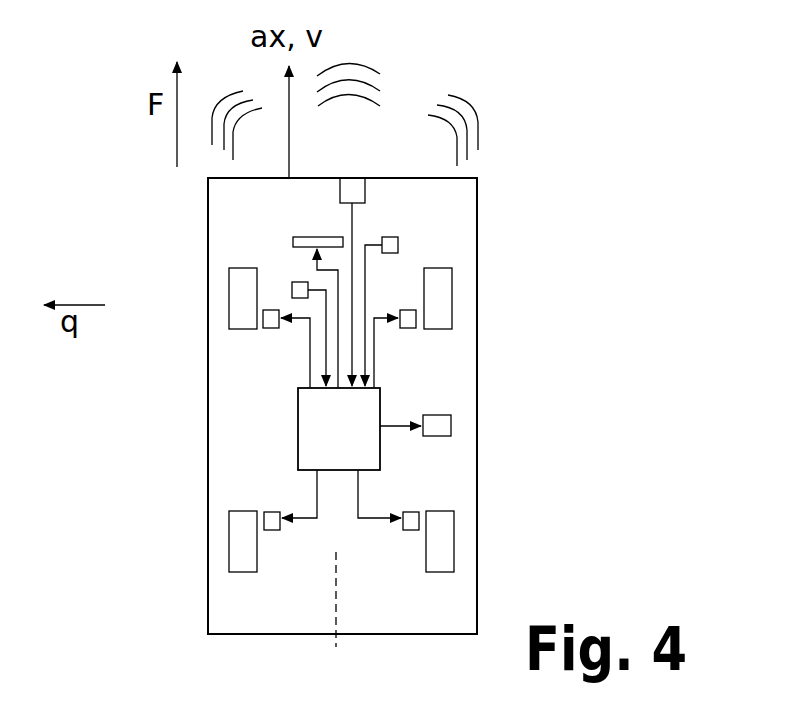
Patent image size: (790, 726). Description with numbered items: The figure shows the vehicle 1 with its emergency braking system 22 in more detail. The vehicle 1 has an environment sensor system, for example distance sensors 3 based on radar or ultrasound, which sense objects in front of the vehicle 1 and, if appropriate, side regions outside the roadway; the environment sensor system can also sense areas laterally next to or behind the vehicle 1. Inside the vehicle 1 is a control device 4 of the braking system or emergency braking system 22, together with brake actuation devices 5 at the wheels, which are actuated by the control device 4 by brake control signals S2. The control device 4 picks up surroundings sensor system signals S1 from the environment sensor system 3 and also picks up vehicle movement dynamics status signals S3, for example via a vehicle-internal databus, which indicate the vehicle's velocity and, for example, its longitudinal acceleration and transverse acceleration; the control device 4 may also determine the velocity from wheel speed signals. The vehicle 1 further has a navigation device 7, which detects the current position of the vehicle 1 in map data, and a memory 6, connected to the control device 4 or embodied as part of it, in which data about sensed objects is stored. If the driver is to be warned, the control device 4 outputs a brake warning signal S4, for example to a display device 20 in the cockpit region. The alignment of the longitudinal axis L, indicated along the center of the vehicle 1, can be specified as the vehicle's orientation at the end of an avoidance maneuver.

The vehicle 1 is at (477, 178).
The distance sensors 3 is at (357, 184).
The control device 4 is at (315, 433).
The brake actuation devices 5 is at (269, 325).
The memory 6 is at (451, 422).
The navigation device 7 is at (398, 243).
The display device 20 is at (293, 237).
The emergency braking system 22 is at (499, 272).
The surroundings sensor system signals S1 is at (352, 215).
The brake control signals S2 is at (315, 500).
The vehicle movement dynamics status signals S3 is at (326, 349).
The brake warning signal S4 is at (317, 268).
The longitudinal axis L is at (337, 645).